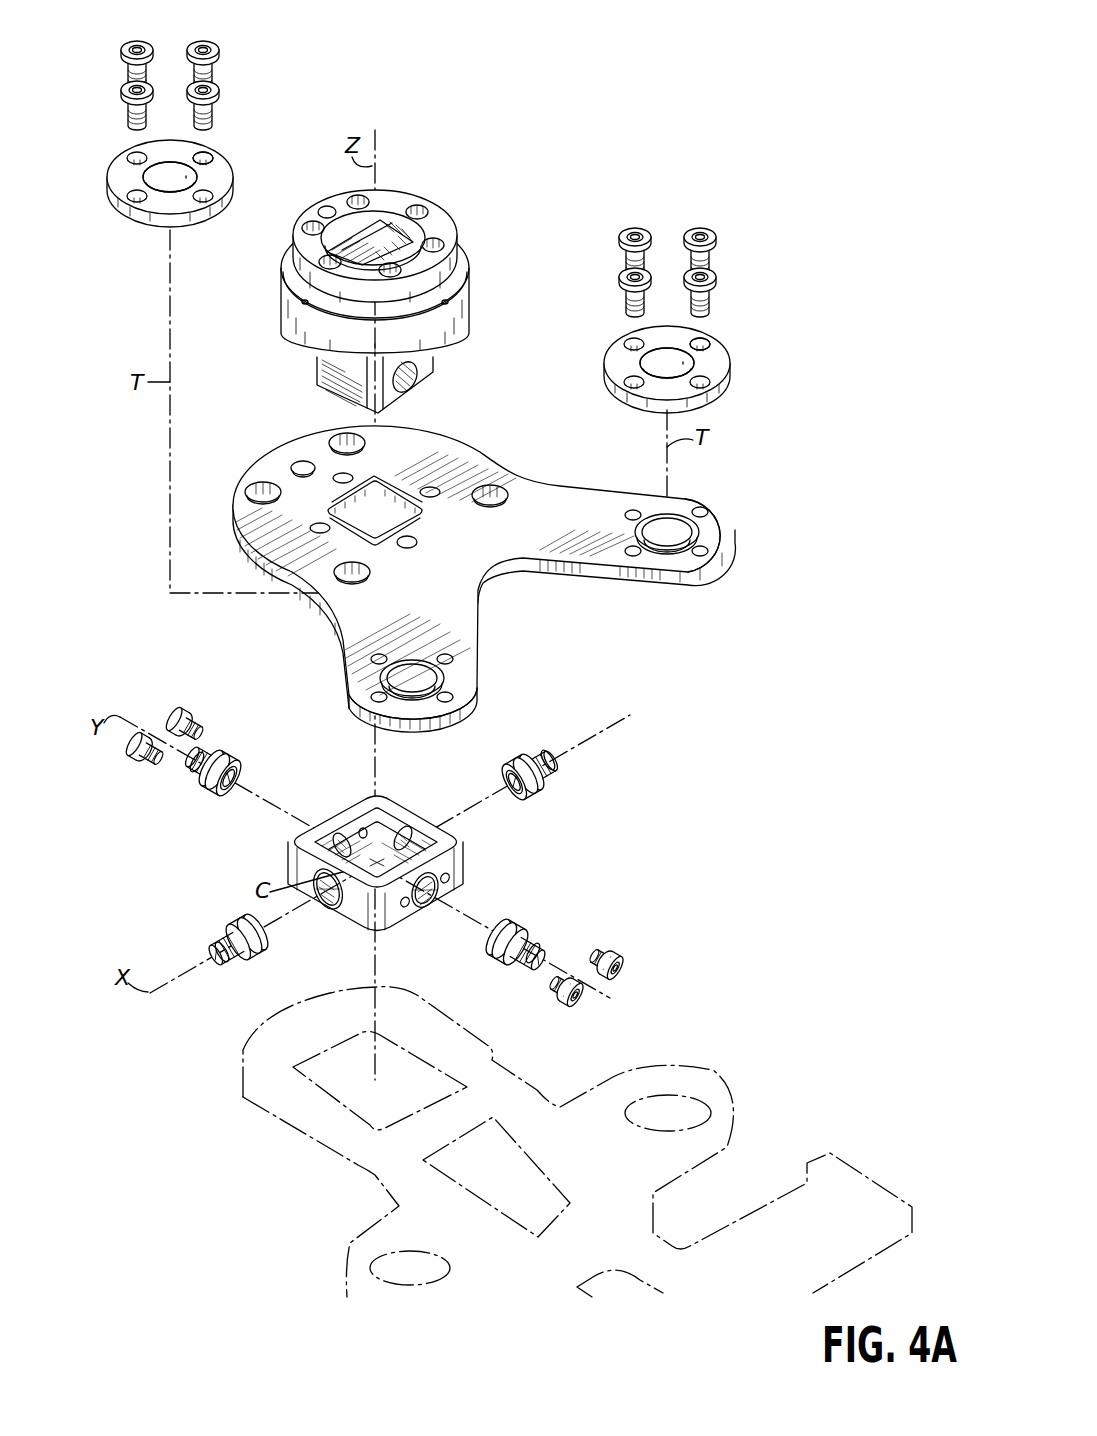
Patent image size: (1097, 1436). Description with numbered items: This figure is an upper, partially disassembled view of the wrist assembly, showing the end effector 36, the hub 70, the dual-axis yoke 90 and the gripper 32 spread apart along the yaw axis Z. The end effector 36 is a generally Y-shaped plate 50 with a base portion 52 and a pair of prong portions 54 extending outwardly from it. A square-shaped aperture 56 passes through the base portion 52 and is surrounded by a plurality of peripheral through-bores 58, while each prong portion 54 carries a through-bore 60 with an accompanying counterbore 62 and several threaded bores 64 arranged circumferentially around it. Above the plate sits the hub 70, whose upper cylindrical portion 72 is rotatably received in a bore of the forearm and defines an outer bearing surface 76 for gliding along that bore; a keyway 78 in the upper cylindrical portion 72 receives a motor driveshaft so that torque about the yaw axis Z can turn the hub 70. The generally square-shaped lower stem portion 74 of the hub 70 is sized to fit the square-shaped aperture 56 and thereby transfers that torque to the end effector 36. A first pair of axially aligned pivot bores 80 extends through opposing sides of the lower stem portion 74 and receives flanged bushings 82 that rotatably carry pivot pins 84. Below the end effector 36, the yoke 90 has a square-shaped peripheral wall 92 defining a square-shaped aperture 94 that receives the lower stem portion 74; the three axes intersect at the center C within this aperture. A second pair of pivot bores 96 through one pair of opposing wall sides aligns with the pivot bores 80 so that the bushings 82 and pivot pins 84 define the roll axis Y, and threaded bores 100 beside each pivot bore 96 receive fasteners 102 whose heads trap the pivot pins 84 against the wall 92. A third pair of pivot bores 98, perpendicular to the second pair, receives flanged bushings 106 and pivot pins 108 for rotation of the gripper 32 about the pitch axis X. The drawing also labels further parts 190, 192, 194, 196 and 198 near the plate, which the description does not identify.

The gripper 32 is at (190, 1071).
The end effector 36 is at (518, 579).
The plate 50 is at (487, 579).
The base portion 52 is at (240, 486).
The prong portions 54 is at (733, 552).
The square-shaped aperture 56 is at (392, 494).
The through-bores 58 is at (413, 541).
The through-bores 60 is at (661, 522).
The counterbores 62 is at (675, 522).
The threaded bores 64 is at (703, 510).
The hub 70 is at (361, 287).
The upper cylindrical portion 72 is at (402, 232).
The lower stem portion 74 is at (367, 377).
The outer bearing surface 76 is at (450, 273).
The keyway 78 is at (388, 230).
The pivot bores 80 is at (418, 378).
The flanged bushings 82 is at (212, 792).
The pivot pins 84 is at (190, 772).
The dual-axis yoke 90 is at (371, 862).
The peripheral wall 92 is at (463, 849).
The square-shaped aperture 94 is at (378, 816).
The pivot bores 96 is at (342, 838).
The pivot bores 98 is at (404, 838).
The threaded bores 100 is at (362, 828).
The fasteners 102 is at (193, 722).
The flanged bushings 106 is at (532, 789).
The pivot pins 108 is at (553, 763).
The flange 190 is at (107, 184).
The central bore of flange 192 is at (168, 162).
The flange edge 194 is at (184, 178).
The flange holes 196 is at (205, 152).
The flange screws 198 is at (130, 44).